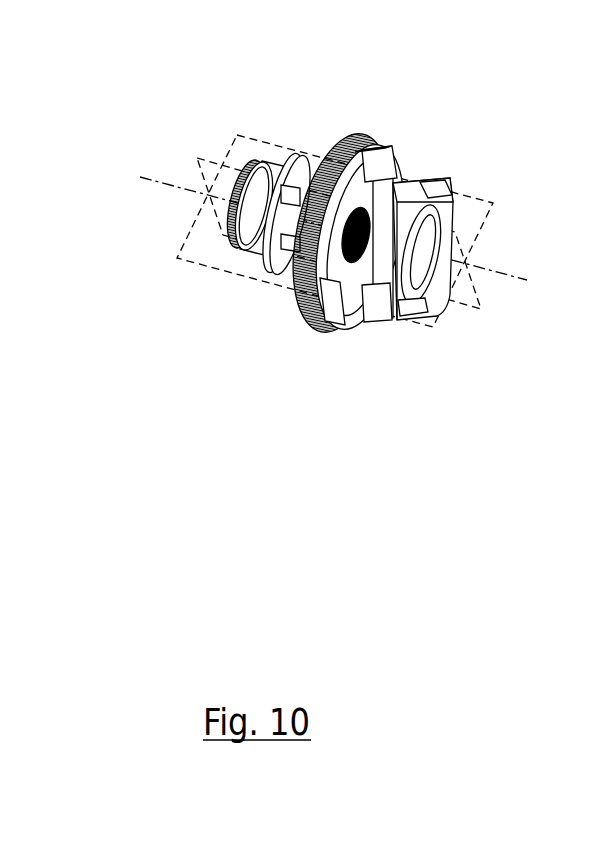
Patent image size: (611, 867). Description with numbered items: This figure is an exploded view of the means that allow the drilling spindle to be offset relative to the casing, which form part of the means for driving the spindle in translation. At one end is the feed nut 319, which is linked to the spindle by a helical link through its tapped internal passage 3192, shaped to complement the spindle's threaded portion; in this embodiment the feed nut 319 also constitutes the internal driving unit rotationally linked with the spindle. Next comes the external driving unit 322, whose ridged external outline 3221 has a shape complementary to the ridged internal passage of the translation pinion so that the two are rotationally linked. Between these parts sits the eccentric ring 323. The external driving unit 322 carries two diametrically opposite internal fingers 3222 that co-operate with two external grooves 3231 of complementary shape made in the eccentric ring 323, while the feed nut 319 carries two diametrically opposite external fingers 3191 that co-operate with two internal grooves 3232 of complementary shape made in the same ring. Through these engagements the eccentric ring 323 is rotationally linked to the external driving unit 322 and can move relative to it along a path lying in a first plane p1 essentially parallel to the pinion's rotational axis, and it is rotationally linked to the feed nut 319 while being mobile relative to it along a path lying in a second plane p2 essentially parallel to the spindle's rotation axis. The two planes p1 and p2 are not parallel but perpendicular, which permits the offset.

The feed nut 319 is at (250, 233).
The external fingers 3191 is at (290, 167).
The tapped internal passage 3192 is at (340, 144).
The external driving unit 322 is at (285, 255).
The external outline 3221 is at (295, 292).
The internal fingers 3222 is at (420, 177).
The eccentric ring 323 is at (480, 278).
The external grooves 3231 is at (452, 195).
The internal grooves 3232 is at (450, 230).
The first plane p1 is at (487, 202).
The second plane p2 is at (480, 298).